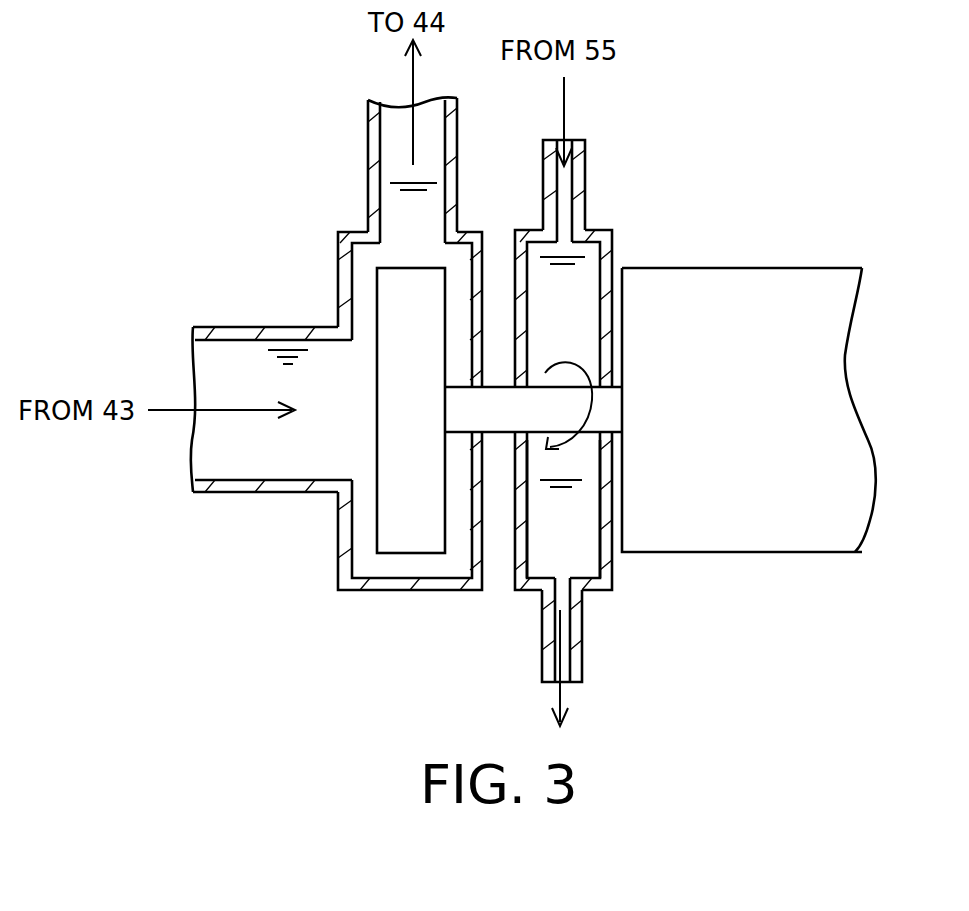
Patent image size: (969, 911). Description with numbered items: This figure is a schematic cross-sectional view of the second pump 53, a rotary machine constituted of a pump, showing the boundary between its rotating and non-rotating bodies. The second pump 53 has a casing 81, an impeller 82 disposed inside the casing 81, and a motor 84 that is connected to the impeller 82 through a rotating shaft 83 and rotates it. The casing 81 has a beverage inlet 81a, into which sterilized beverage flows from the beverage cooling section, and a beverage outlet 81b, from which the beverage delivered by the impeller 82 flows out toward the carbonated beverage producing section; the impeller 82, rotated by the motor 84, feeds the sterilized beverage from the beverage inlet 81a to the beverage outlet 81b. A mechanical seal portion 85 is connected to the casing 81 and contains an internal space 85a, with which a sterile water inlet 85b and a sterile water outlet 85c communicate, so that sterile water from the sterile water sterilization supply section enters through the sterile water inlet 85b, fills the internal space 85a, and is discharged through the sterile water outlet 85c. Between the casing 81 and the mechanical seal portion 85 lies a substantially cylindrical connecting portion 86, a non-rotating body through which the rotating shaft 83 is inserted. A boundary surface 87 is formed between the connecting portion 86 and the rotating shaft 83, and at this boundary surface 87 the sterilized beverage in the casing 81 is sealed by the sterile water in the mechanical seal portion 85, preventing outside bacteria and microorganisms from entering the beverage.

The second pump 53 is at (752, 123).
The casing 81 is at (300, 260).
The beverage inlet 81a is at (243, 327).
The beverage outlet 81b is at (368, 149).
The impeller 82 is at (393, 510).
The rotating shaft 83 is at (612, 400).
The motor 84 is at (745, 528).
The mechanical seal portion 85 is at (592, 238).
The internal space 85a is at (537, 545).
The sterile water inlet 85b is at (549, 168).
The sterile water outlet 85c is at (575, 642).
The connecting portion 86 is at (497, 372).
The boundary surface 87 is at (504, 398).